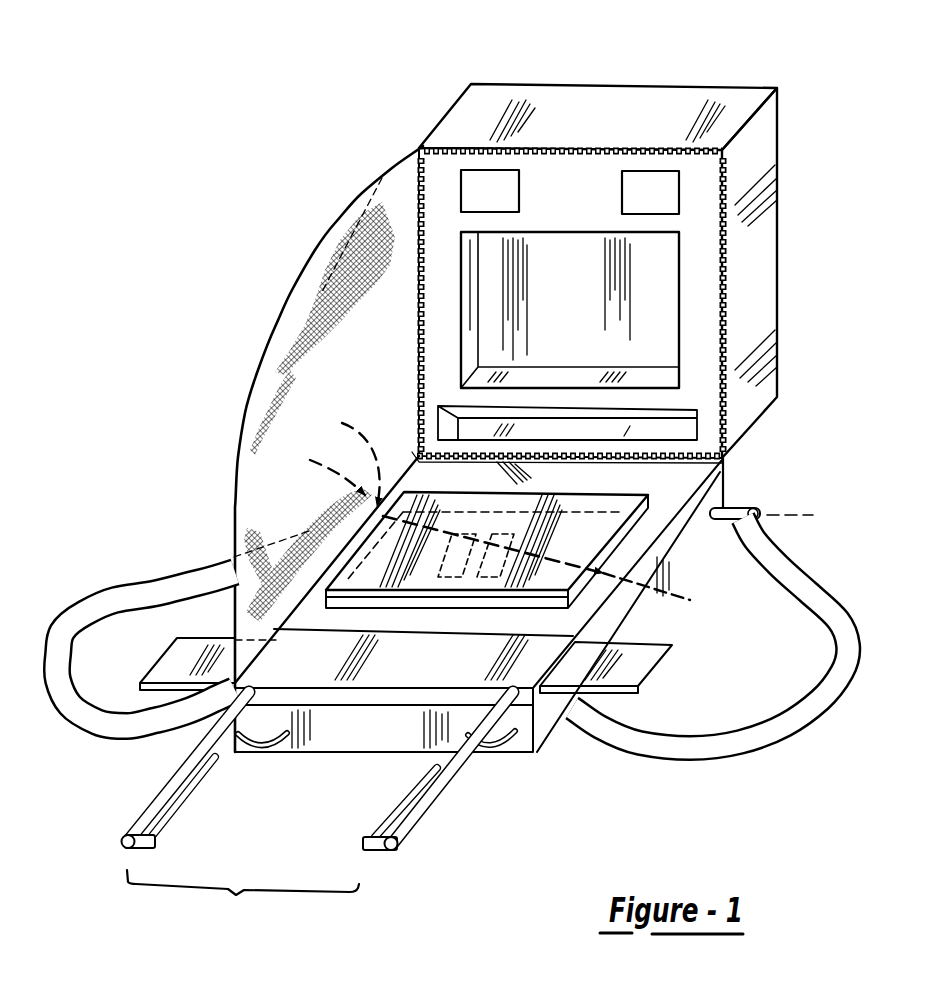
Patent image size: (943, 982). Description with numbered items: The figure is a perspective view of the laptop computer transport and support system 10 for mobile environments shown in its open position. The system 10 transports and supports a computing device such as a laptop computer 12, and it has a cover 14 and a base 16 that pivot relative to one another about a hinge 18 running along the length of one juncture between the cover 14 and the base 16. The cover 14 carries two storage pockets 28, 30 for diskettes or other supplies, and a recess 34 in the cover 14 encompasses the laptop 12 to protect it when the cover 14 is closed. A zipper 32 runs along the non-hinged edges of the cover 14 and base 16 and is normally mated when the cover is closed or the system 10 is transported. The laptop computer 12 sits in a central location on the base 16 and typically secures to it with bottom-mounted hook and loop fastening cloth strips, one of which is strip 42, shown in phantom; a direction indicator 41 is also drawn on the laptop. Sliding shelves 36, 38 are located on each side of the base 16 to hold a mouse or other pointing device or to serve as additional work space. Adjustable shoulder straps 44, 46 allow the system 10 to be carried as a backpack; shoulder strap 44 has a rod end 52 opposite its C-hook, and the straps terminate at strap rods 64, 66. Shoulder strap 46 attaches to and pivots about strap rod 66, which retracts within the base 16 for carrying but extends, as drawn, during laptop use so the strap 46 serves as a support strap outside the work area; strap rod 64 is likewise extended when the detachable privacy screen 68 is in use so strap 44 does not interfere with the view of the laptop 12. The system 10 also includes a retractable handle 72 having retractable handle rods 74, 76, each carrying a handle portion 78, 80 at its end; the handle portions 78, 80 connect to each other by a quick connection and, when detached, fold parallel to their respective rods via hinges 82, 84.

The laptop computer transport and support system 10 is at (806, 151).
The laptop computer 12 is at (578, 553).
The cover 14 is at (640, 107).
The base 16 is at (630, 613).
The hinge 18 is at (723, 457).
The storage pocket 28 is at (519, 190).
The storage pocket 30 is at (622, 190).
The zipper 32 is at (418, 304).
The recess 34 is at (584, 322).
The sliding shelf 36 is at (173, 657).
The sliding shelf 38 is at (636, 664).
The direction of motion 41 is at (323, 469).
The hook and loop fastening cloth strip 42 is at (549, 567).
The shoulder strap 44 is at (83, 618).
The shoulder strap 46 is at (815, 600).
The rod end 52 is at (253, 750).
The strap rod 64 is at (351, 453).
The strap rod 66 is at (745, 513).
The privacy screen 68 is at (325, 367).
The retractable handle 72 is at (298, 807).
The handle rod 74 is at (175, 790).
The handle rod 76 is at (423, 812).
The handle portion 78 is at (188, 788).
The handle portion 80 is at (400, 787).
The hinge 82 is at (150, 841).
The hinge 84 is at (363, 842).